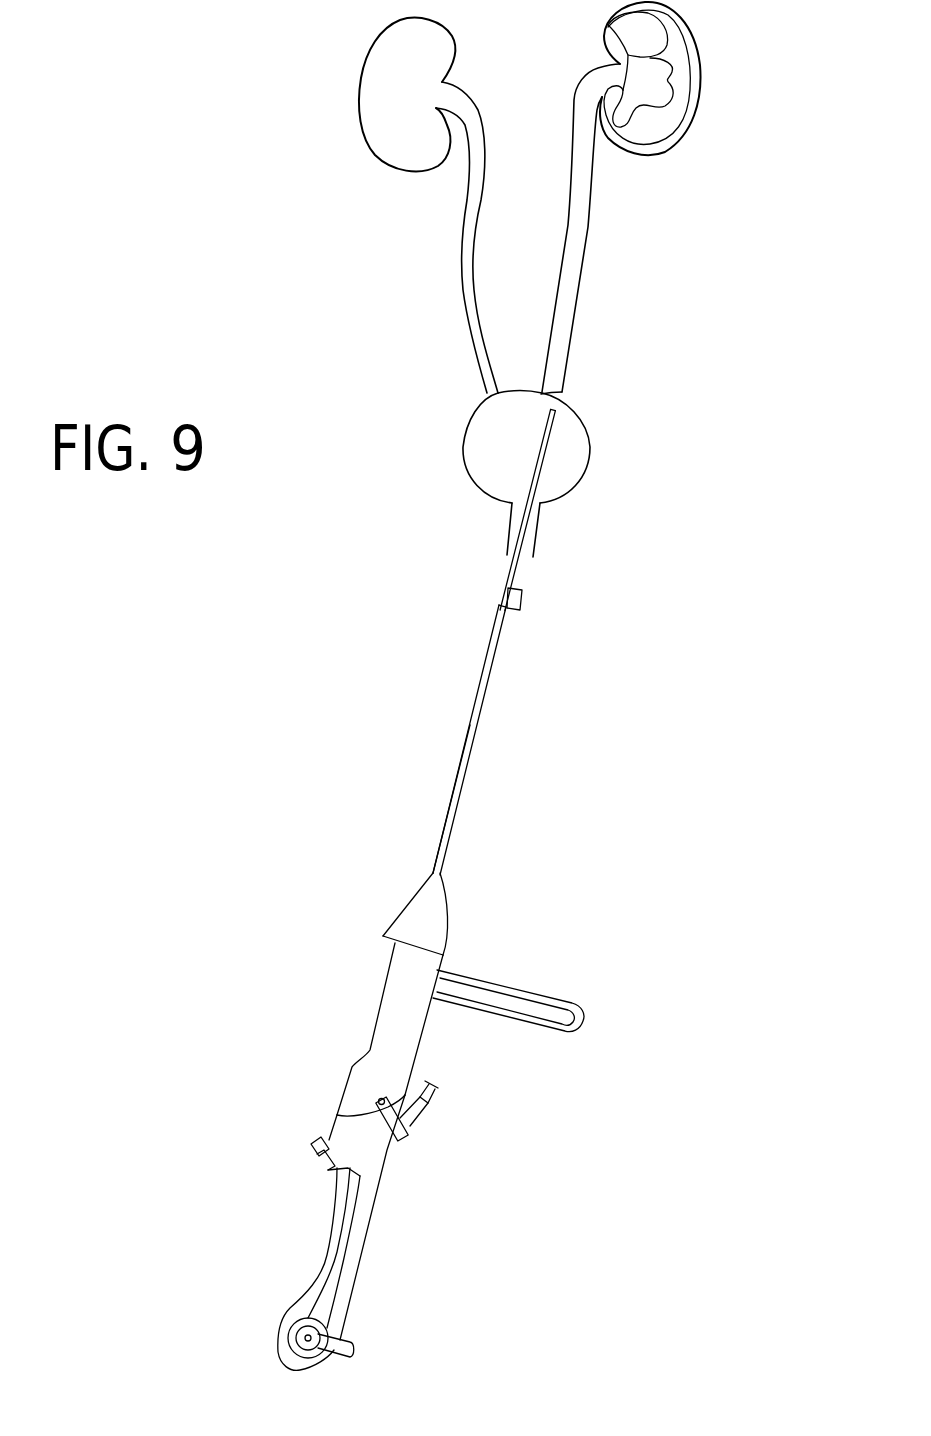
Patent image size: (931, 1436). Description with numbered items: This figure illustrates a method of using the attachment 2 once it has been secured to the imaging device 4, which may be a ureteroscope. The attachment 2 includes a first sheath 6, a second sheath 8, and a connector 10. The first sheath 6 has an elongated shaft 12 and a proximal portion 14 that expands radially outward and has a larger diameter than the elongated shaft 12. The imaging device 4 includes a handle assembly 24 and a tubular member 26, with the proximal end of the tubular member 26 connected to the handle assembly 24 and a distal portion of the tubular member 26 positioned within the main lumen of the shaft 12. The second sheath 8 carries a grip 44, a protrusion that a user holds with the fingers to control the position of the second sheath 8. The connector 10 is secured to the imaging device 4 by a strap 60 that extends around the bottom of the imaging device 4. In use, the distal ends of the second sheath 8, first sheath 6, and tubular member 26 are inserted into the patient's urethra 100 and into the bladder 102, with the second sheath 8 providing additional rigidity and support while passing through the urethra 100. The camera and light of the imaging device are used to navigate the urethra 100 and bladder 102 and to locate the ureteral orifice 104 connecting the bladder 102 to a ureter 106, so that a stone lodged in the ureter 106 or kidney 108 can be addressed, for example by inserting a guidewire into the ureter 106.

The attachment 2 is at (342, 977).
The imaging device 4 is at (284, 1252).
The first sheath 6 is at (438, 846).
The second sheath 8 is at (535, 458).
The connector 10 is at (350, 1092).
The elongated shaft 12 is at (468, 726).
The proximal portion 14 is at (410, 915).
The handle assembly 24 is at (345, 1262).
The tubular member 26 is at (545, 996).
The grip 44 is at (524, 600).
The strap 60 is at (408, 1137).
The urethra 100 is at (540, 540).
The bladder 102 is at (573, 441).
The ureteral orifice 104 is at (548, 394).
The ureter 106 is at (578, 230).
The kidney 108 is at (690, 68).